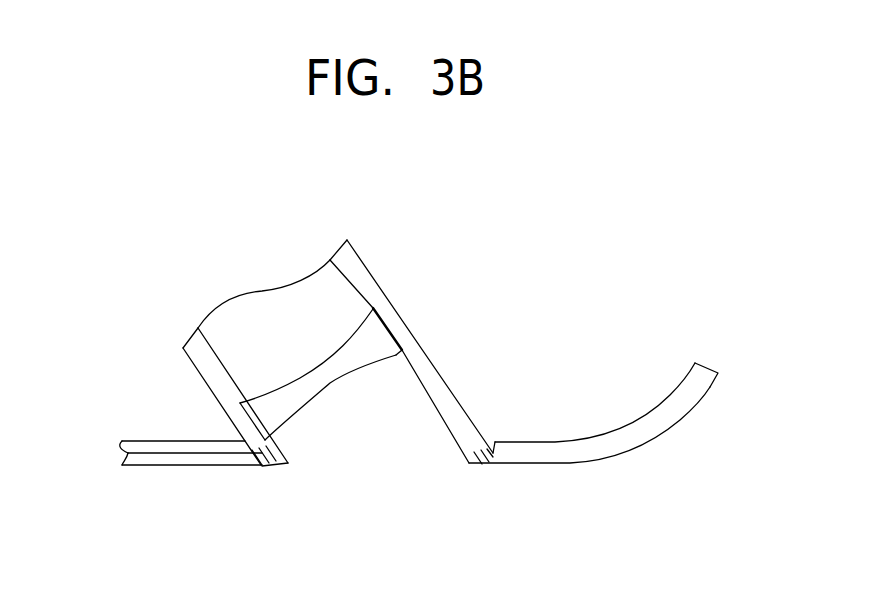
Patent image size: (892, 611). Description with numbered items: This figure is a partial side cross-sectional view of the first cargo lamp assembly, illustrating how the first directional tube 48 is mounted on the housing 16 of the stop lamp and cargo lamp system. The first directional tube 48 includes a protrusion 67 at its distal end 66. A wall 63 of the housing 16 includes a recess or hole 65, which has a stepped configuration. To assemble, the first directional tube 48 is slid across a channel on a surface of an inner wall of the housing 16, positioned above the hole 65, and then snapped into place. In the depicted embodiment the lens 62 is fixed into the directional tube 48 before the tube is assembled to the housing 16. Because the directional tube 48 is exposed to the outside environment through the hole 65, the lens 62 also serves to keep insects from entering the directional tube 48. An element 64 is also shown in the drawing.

The first directional tube 48 is at (363, 268).
The support block 64 is at (393, 332).
The lens 62 is at (340, 363).
The distal end 66 is at (283, 467).
The hole 65 is at (258, 467).
The protrusion 67 is at (478, 468).
The wall 63 is at (638, 431).
The housing 16 is at (701, 394).